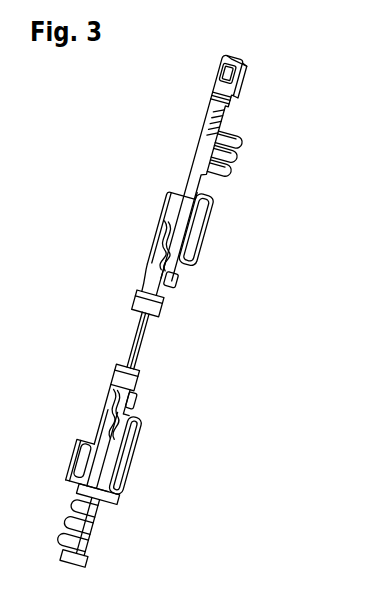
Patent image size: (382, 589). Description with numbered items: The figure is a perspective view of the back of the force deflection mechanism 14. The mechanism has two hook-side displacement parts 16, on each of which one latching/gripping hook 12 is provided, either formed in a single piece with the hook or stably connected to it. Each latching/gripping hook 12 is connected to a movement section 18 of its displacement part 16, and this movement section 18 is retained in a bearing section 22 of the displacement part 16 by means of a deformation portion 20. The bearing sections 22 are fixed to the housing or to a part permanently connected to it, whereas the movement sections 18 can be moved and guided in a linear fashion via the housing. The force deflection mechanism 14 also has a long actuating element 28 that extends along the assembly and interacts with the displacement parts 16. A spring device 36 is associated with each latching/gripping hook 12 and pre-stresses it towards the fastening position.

The force deflection mechanism 14 is at (272, 90).
The actuating element 28 is at (198, 137).
The spring device 36 is at (240, 147).
The movement section 18 is at (139, 282).
The latching/gripping hook 12 is at (197, 283).
The deformation portion 20 is at (148, 225).
The bearing section 22 is at (137, 278).
The displacement part 16 is at (176, 289).